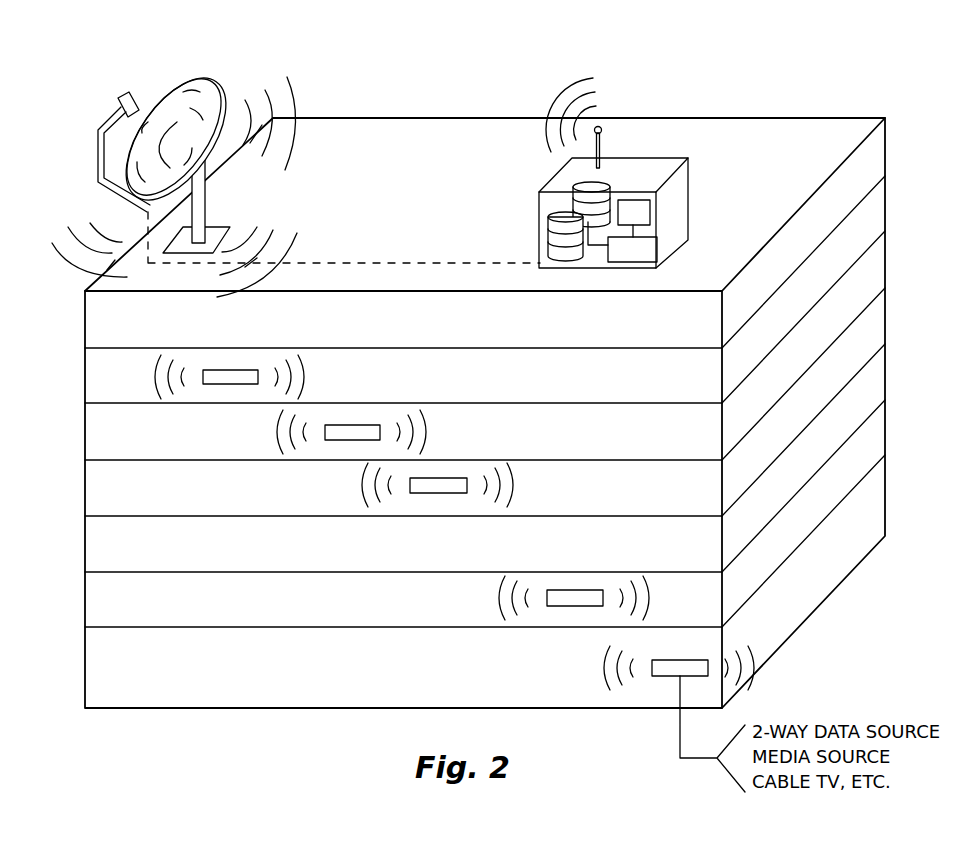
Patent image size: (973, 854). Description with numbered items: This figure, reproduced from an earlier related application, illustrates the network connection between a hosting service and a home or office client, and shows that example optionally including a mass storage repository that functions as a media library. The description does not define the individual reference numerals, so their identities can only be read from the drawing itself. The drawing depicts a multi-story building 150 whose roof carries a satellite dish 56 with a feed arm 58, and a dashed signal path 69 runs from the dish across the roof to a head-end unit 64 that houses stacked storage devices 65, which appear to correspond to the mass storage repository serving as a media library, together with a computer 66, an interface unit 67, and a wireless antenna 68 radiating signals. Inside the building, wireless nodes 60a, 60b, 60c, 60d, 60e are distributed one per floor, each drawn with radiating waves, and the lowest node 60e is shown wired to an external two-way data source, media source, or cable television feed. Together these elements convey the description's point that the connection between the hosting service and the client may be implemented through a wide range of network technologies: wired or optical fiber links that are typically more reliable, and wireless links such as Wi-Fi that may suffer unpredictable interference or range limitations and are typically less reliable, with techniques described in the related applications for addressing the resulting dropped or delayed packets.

The satellite dish antenna 56 is at (197, 76).
The feed horn / LNB arm 58 is at (132, 96).
The wireless access node 60a is at (233, 370).
The wireless access node 60b is at (355, 424).
The wireless access node 60c is at (445, 477).
The wireless access node 60d is at (573, 589).
The wireless access node 60e is at (668, 660).
The head-end server unit 64 is at (690, 204).
The data storage devices 65 is at (588, 184).
The computer / processor 66 is at (637, 208).
The interface / modem unit 67 is at (642, 247).
The wireless antenna 68 is at (600, 137).
The signal cable connection 69 is at (400, 262).
The building 150 is at (742, 119).